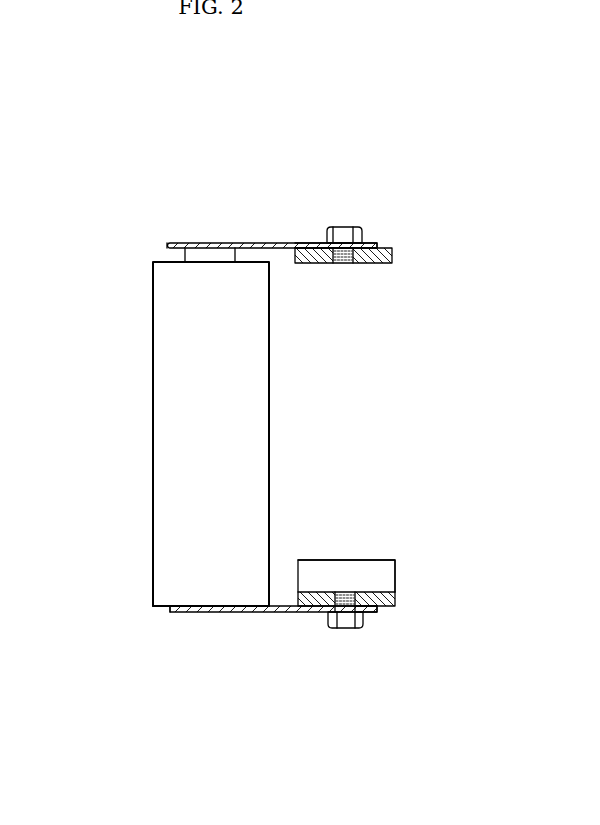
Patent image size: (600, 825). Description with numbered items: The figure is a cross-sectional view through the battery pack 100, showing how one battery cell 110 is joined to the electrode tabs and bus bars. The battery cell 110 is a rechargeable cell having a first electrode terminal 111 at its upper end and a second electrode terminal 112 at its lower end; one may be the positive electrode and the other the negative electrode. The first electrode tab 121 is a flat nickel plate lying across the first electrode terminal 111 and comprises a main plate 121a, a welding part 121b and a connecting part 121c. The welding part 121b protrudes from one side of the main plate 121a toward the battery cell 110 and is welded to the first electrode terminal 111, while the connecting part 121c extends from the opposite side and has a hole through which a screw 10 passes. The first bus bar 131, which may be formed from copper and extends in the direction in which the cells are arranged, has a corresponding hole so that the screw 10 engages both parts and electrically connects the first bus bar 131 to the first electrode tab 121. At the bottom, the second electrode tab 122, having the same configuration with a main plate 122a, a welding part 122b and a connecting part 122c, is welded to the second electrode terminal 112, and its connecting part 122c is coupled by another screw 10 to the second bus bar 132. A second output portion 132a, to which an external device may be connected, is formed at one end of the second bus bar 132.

The battery pack 100 is at (42, 107).
The screw 10 is at (343, 232).
The battery cell 110 is at (160, 435).
The first electrode terminal 111 is at (197, 258).
The second electrode terminal 112 is at (205, 600).
The first electrode tab 121 is at (250, 180).
The main plate 121a is at (258, 243).
The welding part 121b is at (167, 247).
The connecting part 121c is at (327, 209).
The second electrode tab 122 is at (300, 683).
The main plate 122a is at (282, 613).
The welding part 122b is at (185, 612).
The connecting part 122c is at (396, 656).
The first bus bar 131 is at (373, 263).
The second bus bar 132 is at (305, 590).
The second output portion 132a is at (387, 578).